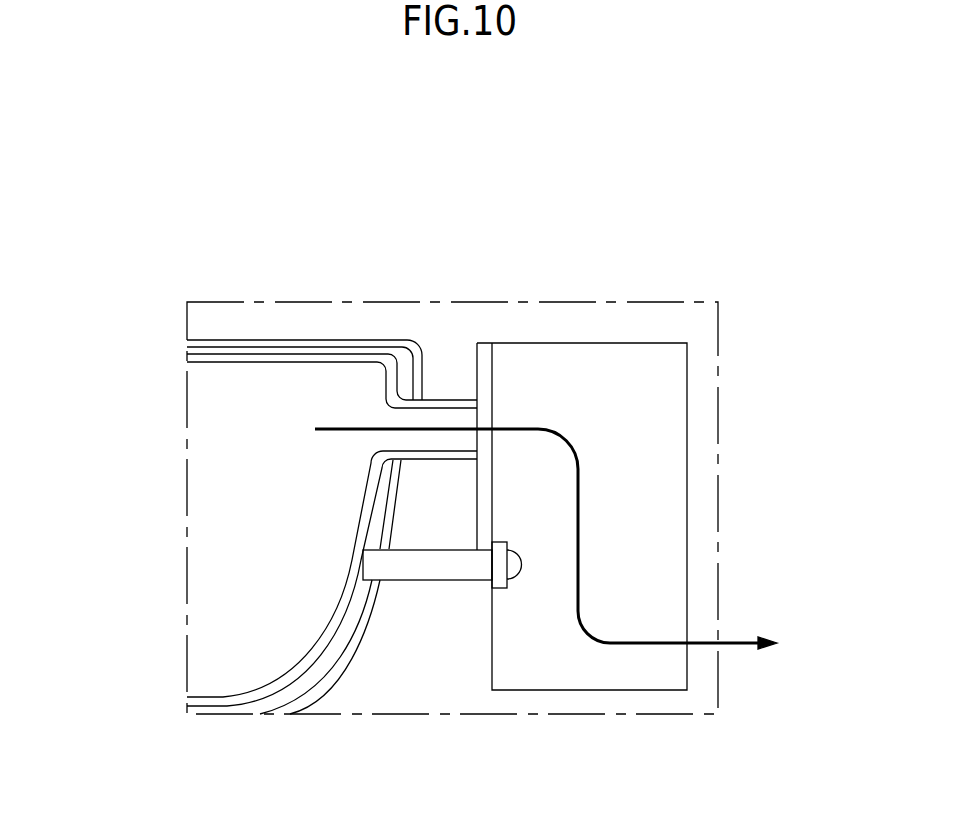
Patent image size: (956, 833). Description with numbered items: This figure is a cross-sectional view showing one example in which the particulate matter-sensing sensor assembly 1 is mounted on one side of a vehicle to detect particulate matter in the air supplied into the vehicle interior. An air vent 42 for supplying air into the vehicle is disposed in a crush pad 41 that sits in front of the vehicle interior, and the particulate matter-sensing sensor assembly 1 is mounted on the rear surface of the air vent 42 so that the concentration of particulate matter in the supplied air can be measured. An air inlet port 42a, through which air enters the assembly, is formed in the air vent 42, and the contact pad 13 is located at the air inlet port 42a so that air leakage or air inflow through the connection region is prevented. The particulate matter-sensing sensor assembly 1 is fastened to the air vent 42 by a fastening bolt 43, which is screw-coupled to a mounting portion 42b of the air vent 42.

The particulate matter-sensing sensor assembly 1 is at (673, 328).
The contact pad 13 is at (486, 348).
The crush pad 41 is at (325, 342).
The air vent 42 is at (287, 342).
The air inlet port 42a is at (433, 402).
The mounting portion 42b is at (437, 568).
The fastening bolt 43 is at (512, 570).